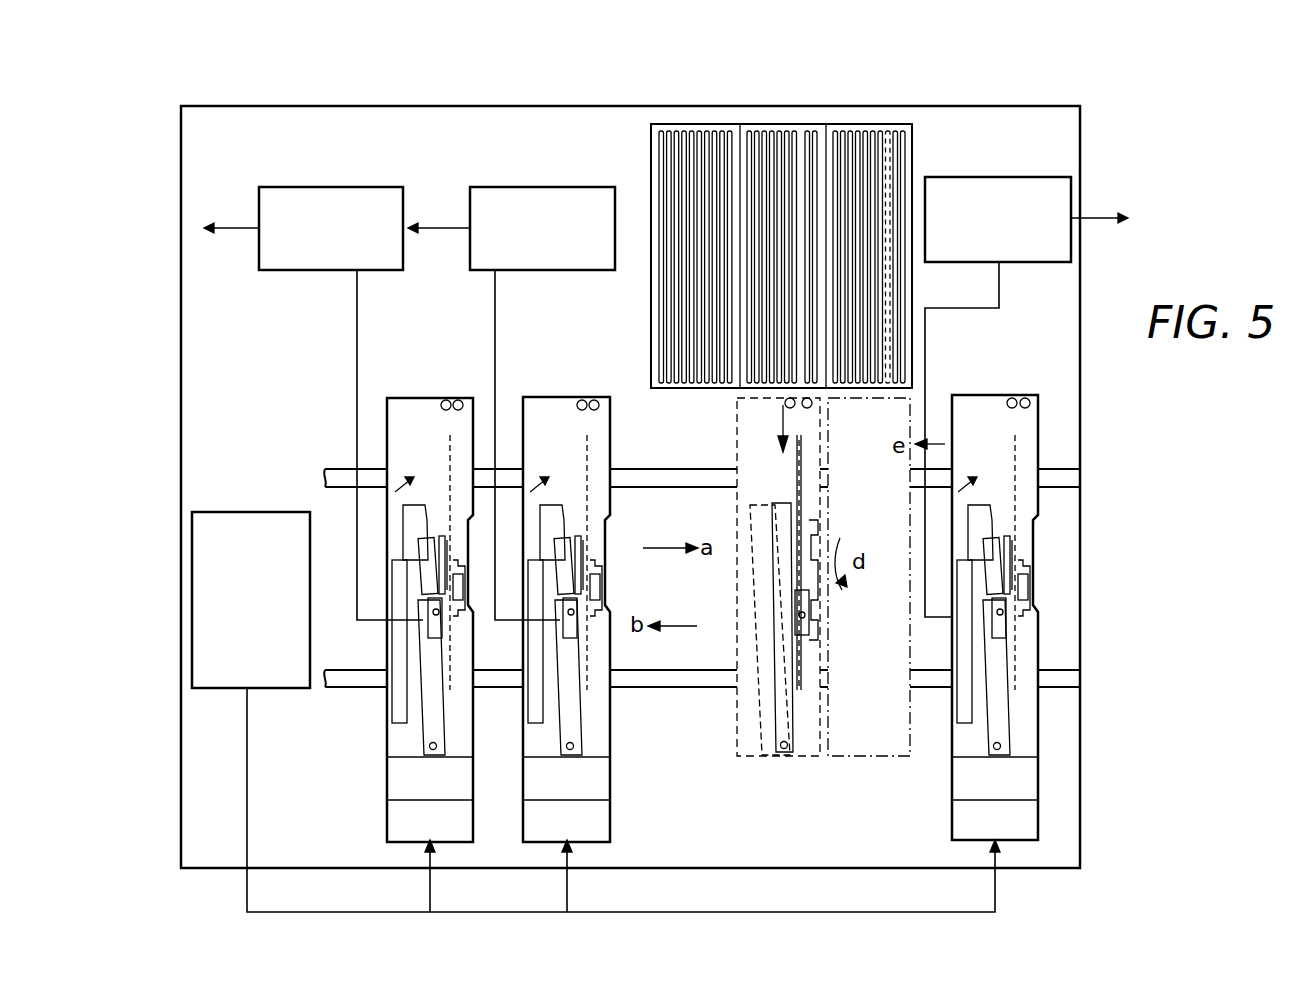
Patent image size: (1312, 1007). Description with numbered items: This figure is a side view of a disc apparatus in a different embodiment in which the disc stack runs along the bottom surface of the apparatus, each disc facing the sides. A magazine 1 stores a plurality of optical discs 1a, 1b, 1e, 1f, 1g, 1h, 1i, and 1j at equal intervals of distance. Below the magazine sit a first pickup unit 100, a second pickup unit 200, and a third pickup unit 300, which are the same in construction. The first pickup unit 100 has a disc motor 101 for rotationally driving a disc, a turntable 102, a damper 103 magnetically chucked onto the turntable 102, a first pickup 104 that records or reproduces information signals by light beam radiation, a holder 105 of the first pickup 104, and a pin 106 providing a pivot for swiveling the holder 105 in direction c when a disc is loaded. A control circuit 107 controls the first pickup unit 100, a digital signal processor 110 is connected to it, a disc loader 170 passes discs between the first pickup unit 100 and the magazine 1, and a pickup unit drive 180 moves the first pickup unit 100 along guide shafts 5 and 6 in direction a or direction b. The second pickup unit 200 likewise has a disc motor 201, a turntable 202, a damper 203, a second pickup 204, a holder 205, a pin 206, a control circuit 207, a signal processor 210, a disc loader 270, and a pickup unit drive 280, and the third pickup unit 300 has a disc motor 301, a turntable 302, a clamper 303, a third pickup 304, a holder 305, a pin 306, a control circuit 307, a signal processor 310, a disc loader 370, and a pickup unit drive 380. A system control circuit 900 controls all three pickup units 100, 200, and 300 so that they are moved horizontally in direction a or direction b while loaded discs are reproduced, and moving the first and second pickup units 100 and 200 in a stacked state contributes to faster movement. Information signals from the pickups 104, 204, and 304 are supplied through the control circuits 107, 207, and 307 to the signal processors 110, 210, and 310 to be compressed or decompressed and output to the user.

The magazine 1 is at (913, 155).
The optical disc 1a is at (815, 131).
The optical disc 1b is at (807, 131).
The optical disc 1e is at (787, 131).
The optical disc 1f is at (779, 131).
The optical disc 1g is at (772, 131).
The optical disc 1h is at (764, 131).
The optical disc 1i is at (757, 131).
The optical disc 1j is at (749, 131).
The guide shaft 5 is at (1060, 487).
The guide shaft 6 is at (1060, 687).
The first pickup unit 100 is at (558, 397).
The disc motor 101 is at (556, 548).
The turntable 102 is at (578, 548).
The damper 103 is at (606, 560).
The first pickup 104 is at (572, 615).
The holder 105 is at (578, 708).
The pin 106 is at (575, 745).
The control circuit 107 is at (530, 688).
The digital signal processor 110 is at (525, 187).
The disc loader 170 is at (610, 786).
The pickup unit drive 180 is at (610, 826).
The second pickup unit 200 is at (420, 398).
The disc motor 201 is at (437, 553).
The turntable 202 is at (441, 585).
The damper 203 is at (470, 595).
The second pickup 204 is at (438, 612).
The holder 205 is at (428, 731).
The pin 206 is at (431, 746).
The control circuit 207 is at (400, 640).
The signal processor 210 is at (330, 187).
The disc loader 270 is at (392, 797).
The pickup unit drive 280 is at (392, 825).
The third pickup unit 300 is at (970, 395).
The disc motor 301 is at (985, 575).
The turntable 302 is at (1035, 525).
The clamper 303 is at (1035, 560).
The third pickup 304 is at (1005, 630).
The holder 305 is at (1000, 720).
The pin 306 is at (1002, 746).
The control circuit 307 is at (962, 700).
The signal processor 310 is at (985, 177).
The disc loader 370 is at (952, 786).
The pickup unit drive 380 is at (952, 826).
The system control circuit 900 is at (240, 512).